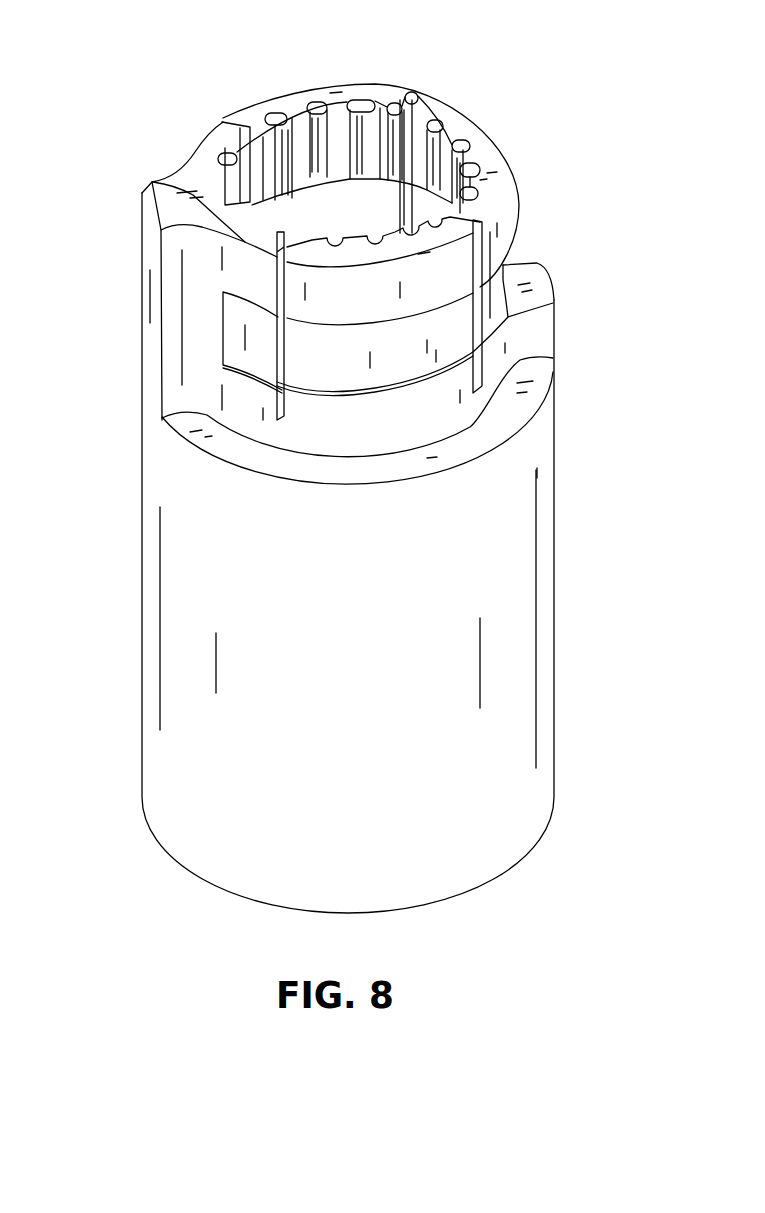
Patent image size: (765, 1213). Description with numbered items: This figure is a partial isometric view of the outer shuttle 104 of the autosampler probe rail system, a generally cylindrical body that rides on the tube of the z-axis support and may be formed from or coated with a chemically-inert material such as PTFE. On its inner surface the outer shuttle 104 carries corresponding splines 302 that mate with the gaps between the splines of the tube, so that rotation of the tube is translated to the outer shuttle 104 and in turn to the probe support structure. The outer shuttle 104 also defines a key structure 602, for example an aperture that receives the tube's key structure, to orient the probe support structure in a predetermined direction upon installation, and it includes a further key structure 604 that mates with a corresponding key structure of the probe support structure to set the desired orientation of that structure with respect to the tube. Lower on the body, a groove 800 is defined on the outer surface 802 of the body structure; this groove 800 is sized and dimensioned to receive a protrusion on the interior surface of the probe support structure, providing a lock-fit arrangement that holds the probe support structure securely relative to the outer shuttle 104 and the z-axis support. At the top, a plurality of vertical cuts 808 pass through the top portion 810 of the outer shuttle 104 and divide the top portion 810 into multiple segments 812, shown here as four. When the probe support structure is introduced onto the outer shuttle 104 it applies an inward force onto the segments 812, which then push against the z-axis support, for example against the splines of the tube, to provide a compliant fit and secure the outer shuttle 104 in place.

The outer shuttle 104 is at (150, 152).
The splines 302 is at (298, 112).
The key structure 602 is at (218, 174).
The key structure 604 is at (177, 205).
The groove 800 is at (402, 352).
The outer surface 802 is at (460, 261).
The vertical cuts 808 is at (414, 93).
The top portion 810 is at (494, 104).
The segments 812 is at (487, 148).